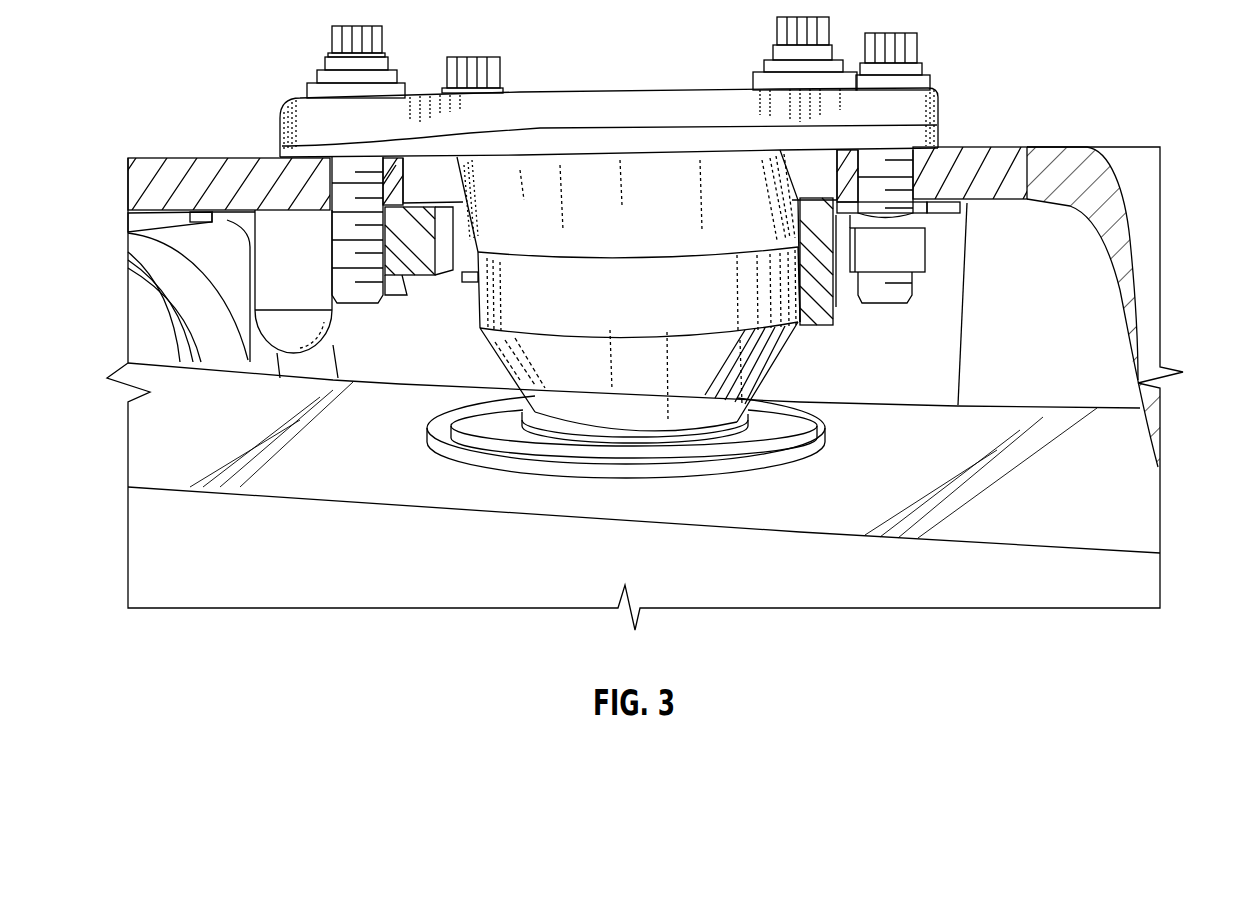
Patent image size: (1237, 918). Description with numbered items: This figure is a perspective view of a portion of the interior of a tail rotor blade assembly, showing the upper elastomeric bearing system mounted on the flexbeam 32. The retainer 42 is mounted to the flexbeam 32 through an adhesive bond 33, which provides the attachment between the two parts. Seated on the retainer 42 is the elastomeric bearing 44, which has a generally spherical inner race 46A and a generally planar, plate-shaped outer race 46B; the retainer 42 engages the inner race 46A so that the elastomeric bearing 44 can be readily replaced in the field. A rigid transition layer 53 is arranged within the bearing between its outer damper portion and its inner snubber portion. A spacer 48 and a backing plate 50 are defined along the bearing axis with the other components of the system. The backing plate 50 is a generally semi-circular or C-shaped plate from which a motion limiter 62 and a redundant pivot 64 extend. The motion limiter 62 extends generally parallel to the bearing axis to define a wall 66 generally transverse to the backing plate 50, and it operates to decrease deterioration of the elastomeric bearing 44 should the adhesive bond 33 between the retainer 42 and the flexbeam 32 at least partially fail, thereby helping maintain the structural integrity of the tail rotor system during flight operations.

The flexbeam 32 is at (1145, 525).
The adhesive bond 33 is at (505, 463).
The retainer 42 is at (750, 470).
The elastomeric bearing 44 is at (461, 307).
The inner race 46A is at (805, 410).
The outer race 46B is at (938, 106).
The spacer 48 is at (938, 142).
The backing plate 50 is at (947, 208).
The rigid transition layer 53 is at (637, 307).
The motion limiter 62 is at (833, 305).
The redundant pivot 64 is at (249, 266).
The wall 66 is at (800, 307).